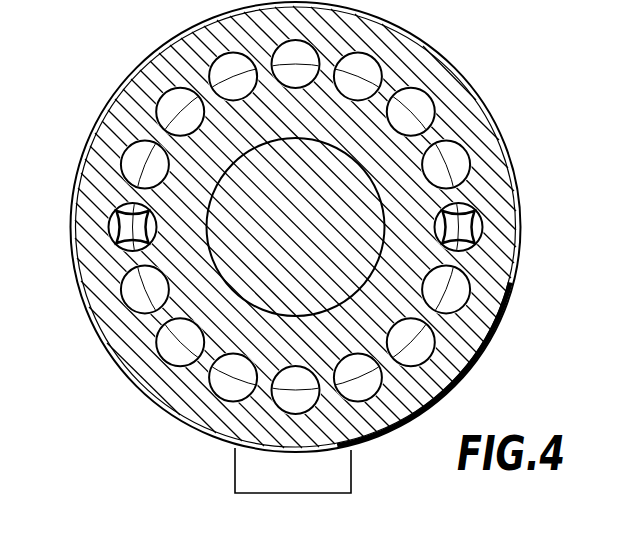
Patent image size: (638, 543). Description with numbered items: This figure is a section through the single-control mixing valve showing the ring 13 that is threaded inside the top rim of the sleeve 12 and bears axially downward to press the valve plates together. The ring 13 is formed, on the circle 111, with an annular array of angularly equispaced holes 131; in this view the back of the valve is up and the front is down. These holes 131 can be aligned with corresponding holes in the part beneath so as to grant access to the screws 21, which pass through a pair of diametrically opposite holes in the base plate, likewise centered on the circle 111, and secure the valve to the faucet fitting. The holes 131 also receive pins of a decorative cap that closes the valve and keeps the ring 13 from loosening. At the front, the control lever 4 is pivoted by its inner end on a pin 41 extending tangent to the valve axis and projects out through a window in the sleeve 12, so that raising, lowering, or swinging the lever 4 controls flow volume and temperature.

The control lever 4 is at (340, 472).
The sleeve 12 is at (517, 170).
The ring 13 is at (477, 131).
The screws 21 is at (473, 223).
The pin 41 is at (225, 243).
The circle 111 is at (207, 363).
The holes 131 is at (422, 102).